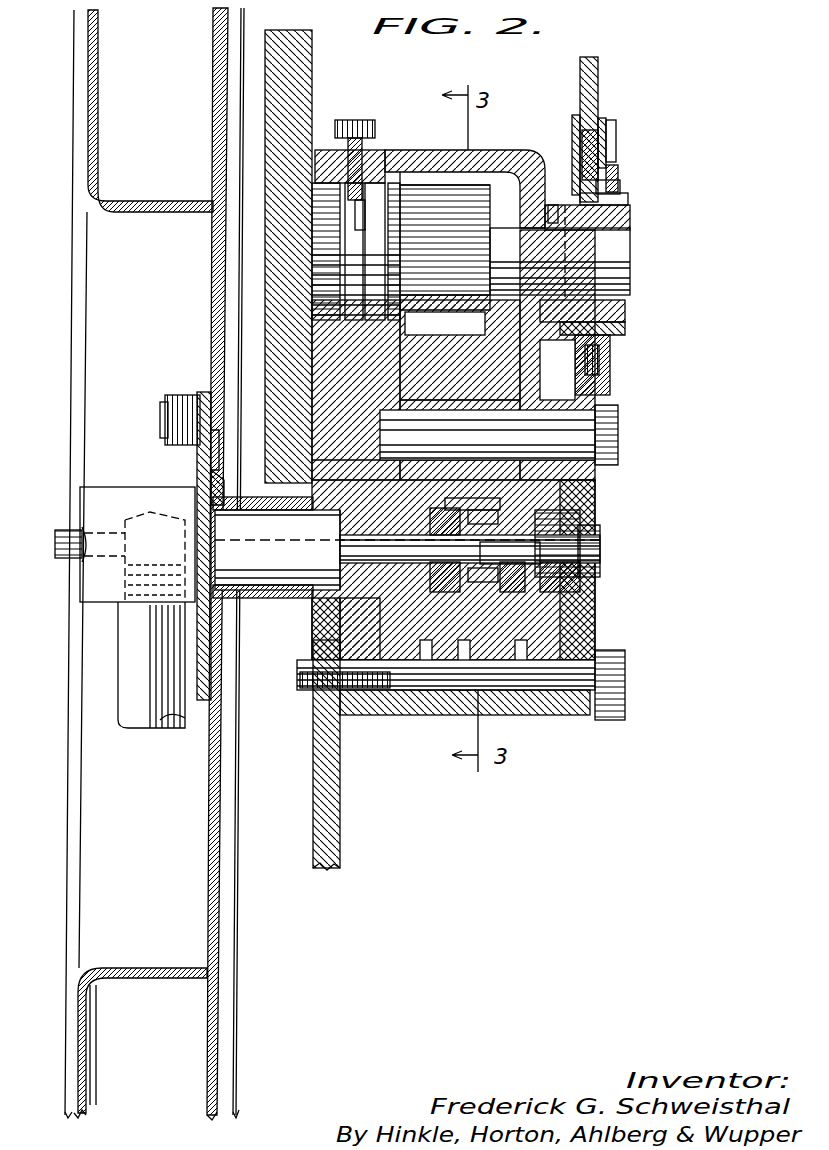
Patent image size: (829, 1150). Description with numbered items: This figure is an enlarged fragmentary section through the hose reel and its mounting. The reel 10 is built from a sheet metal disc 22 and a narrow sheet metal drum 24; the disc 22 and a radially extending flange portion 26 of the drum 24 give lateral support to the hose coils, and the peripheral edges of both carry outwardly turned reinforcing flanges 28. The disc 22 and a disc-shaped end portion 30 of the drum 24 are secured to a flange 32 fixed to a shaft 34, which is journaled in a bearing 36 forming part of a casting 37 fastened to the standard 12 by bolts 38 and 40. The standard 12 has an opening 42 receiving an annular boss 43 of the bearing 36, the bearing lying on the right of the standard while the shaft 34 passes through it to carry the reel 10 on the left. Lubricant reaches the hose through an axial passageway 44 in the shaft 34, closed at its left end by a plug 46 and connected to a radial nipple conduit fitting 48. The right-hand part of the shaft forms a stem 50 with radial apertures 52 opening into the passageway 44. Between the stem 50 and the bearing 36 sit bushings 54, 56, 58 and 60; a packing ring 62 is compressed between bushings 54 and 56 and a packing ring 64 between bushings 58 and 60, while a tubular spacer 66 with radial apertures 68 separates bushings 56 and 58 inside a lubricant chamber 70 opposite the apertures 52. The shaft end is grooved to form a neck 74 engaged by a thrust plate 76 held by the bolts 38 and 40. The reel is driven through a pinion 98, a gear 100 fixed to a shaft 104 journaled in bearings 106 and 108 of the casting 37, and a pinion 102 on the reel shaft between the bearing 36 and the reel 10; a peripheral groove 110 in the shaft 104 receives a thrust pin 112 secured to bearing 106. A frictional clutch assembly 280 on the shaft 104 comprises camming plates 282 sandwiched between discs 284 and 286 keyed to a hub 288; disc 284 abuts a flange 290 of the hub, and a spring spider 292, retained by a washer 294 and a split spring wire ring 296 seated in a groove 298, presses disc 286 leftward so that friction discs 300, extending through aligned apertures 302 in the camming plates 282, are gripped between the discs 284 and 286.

The reel 10 is at (68, 822).
The standard 12 is at (324, 814).
The sheet metal disc 22 is at (222, 948).
The sheet metal drum 24 is at (134, 978).
The flange portion 26 is at (82, 1050).
The reinforcing flanges 28 is at (70, 1060).
The disc-shaped end portion 30 is at (214, 822).
The flange 32 is at (205, 702).
The shaft 34 is at (254, 600).
The bearing 36 is at (570, 616).
The casting 37 is at (456, 146).
The bolt 38 is at (612, 422).
The bolt 40 is at (612, 676).
The opening 42 is at (324, 600).
The annular boss 43 is at (284, 598).
The axial passageway 44 is at (312, 558).
The plug 46 is at (66, 532).
The nipple conduit fitting 48 is at (126, 660).
The stem 50 is at (560, 530).
The radial apertures 52 is at (546, 552).
The bushing 54 is at (356, 606).
The bushing 56 is at (456, 594).
The bushing 58 is at (504, 594).
The bushing 60 is at (548, 594).
The packing ring 62 is at (424, 662).
The packing ring 64 is at (522, 662).
The tubular spacer 66 is at (462, 662).
The radial apertures 68 is at (484, 594).
The chamber 70 is at (492, 504).
The neck 74 is at (600, 534).
The thrust plate 76 is at (596, 640).
The pinion 98 is at (470, 185).
The gear 100 is at (302, 54).
The pinion 102 is at (268, 600).
The shaft 104 is at (612, 246).
The bearing 106 is at (372, 180).
The bearing 108 is at (553, 205).
The peripheral groove 110 is at (360, 220).
The thrust pin 112 is at (376, 142).
The frictional clutch assembly 280 is at (632, 358).
The camming plates 282 is at (598, 96).
The disc 284 is at (572, 120).
The disc 286 is at (602, 118).
The hub 288 is at (626, 218).
The flange 290 is at (590, 310).
The spring spider 292 is at (614, 176).
The washer 294 is at (622, 188).
The split spring wire ring 296 is at (630, 198).
The groove 298 is at (626, 322).
The discs 300 is at (612, 152).
The apertures 302 is at (612, 134).